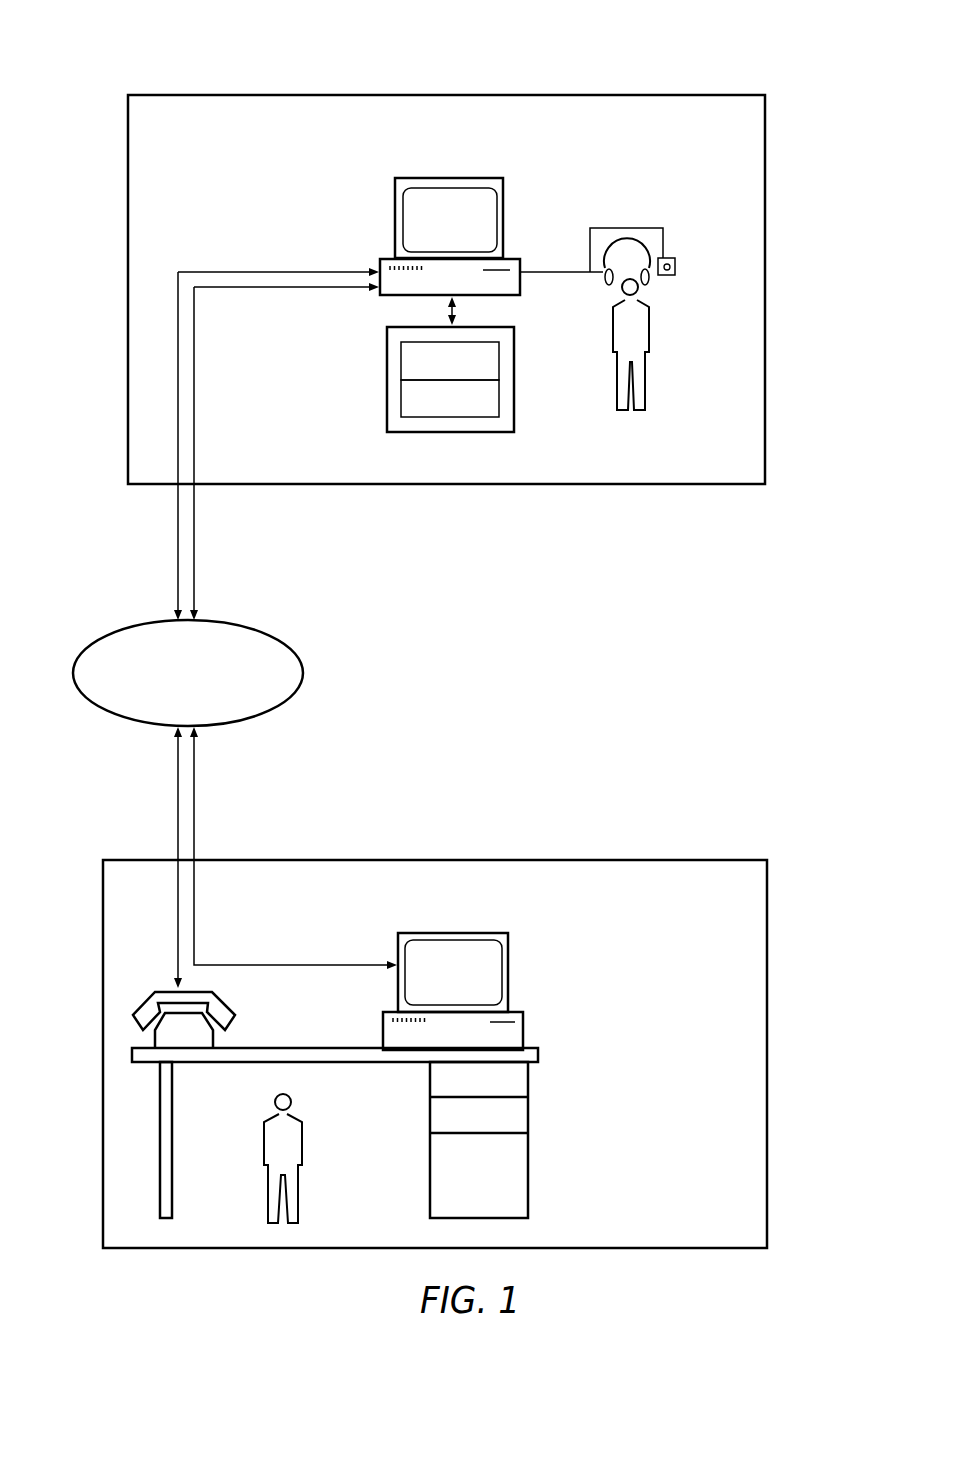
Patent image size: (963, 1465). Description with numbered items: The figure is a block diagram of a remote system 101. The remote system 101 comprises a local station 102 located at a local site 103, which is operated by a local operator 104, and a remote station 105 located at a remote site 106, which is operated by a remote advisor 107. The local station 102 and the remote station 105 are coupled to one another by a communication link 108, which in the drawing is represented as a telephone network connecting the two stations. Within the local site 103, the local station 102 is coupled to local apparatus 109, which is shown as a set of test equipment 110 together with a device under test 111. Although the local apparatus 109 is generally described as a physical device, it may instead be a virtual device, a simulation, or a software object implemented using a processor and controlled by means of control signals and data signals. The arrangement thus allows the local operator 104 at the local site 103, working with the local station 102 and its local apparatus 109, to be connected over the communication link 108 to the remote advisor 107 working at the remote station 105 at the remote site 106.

The remote system 101 is at (100, 85).
The local station 102 is at (800, 496).
The local site 103 is at (765, 252).
The local operator 104 is at (649, 342).
The remote station 105 is at (800, 852).
The remote site 106 is at (767, 1017).
The remote advisor 107 is at (302, 1155).
The communication link 108 is at (308, 495).
The local apparatus 109 is at (458, 392).
The test equipment 110 is at (400, 393).
The device under test 111 is at (400, 365).